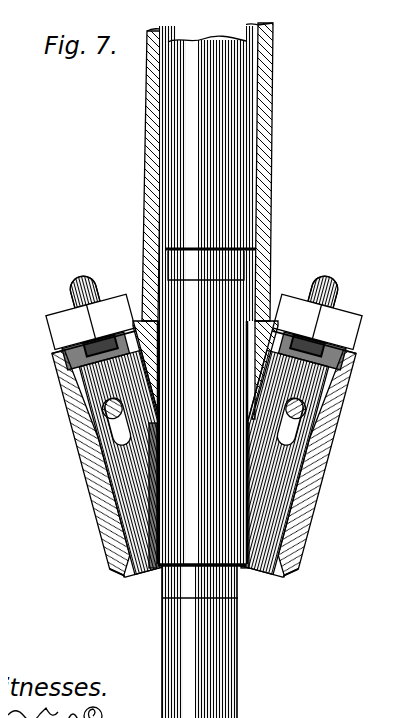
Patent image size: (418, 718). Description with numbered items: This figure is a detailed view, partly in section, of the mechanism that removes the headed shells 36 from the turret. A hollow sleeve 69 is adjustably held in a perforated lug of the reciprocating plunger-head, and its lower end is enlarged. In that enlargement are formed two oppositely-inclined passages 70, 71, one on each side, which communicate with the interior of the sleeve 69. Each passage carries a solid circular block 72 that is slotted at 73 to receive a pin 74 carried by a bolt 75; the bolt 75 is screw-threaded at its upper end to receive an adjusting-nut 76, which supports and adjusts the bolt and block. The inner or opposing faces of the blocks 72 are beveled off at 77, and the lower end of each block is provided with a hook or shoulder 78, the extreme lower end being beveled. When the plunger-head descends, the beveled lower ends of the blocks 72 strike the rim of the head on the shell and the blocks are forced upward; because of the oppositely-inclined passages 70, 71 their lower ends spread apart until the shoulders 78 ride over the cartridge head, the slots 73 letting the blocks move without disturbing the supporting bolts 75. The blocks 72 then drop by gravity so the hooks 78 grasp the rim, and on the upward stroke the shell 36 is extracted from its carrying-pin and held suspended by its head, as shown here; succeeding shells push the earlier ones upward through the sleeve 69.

The shell 36 is at (183, 110).
The hollow sleeve 69 is at (258, 91).
The inclined passage 70 is at (58, 353).
The inclined passage 71 is at (335, 353).
The block 72 is at (108, 472).
The slot 73 is at (110, 428).
The pin 74 is at (100, 403).
The bolt 75 is at (58, 284).
The adjusting-nut 76 is at (52, 317).
The beveled face 77 is at (143, 502).
The hook or shoulder 78 is at (151, 568).